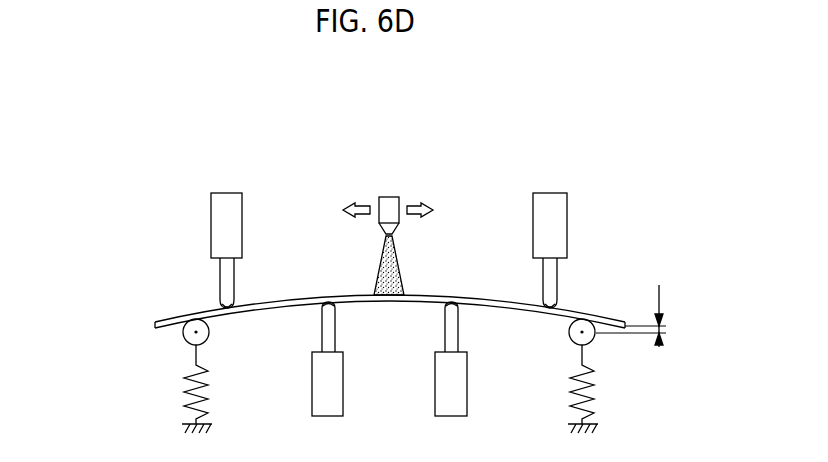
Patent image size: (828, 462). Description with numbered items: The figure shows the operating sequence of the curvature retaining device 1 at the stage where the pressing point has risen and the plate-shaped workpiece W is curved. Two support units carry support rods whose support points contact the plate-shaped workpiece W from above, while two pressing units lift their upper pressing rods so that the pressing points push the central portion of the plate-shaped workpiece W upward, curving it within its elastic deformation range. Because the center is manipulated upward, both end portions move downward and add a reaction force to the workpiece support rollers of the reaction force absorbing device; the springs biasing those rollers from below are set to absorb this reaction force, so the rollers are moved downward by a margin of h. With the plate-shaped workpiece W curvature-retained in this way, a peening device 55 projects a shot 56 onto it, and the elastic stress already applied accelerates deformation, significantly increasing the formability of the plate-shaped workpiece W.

The curvature retaining device 1 is at (137, 232).
The plate-shaped workpiece W is at (178, 319).
The peening device 55 is at (390, 200).
The shot 56 is at (382, 272).
The margin h is at (637, 316).